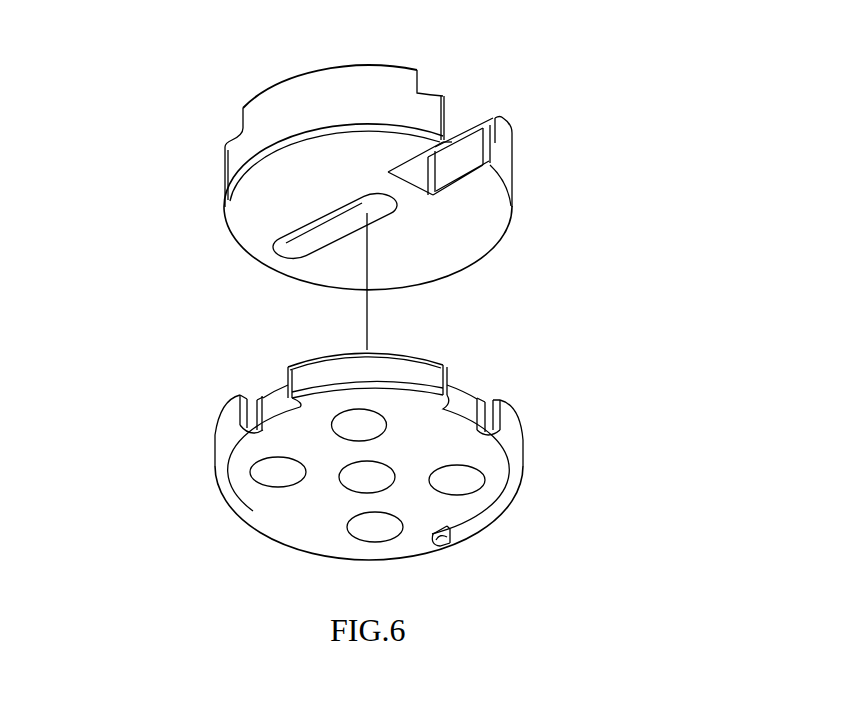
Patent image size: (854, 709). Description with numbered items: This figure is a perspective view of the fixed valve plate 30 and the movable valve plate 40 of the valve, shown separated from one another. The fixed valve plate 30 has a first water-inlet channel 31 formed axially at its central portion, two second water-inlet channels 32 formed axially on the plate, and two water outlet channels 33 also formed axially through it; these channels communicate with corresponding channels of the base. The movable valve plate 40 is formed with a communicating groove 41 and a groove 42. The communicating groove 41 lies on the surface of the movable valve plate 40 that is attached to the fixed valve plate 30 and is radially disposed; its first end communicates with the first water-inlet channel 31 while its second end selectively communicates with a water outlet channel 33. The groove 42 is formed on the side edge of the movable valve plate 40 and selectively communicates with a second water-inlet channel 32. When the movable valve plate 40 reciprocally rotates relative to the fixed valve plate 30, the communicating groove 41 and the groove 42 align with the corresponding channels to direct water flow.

The fixed valve plate 30 is at (379, 452).
The first water-inlet channel 31 is at (375, 477).
The second water-inlet channel 32 is at (358, 422).
The water outlet channel 33 is at (275, 470).
The movable valve plate 40 is at (366, 164).
The communicating groove 41 is at (312, 240).
The groove 42 is at (462, 152).